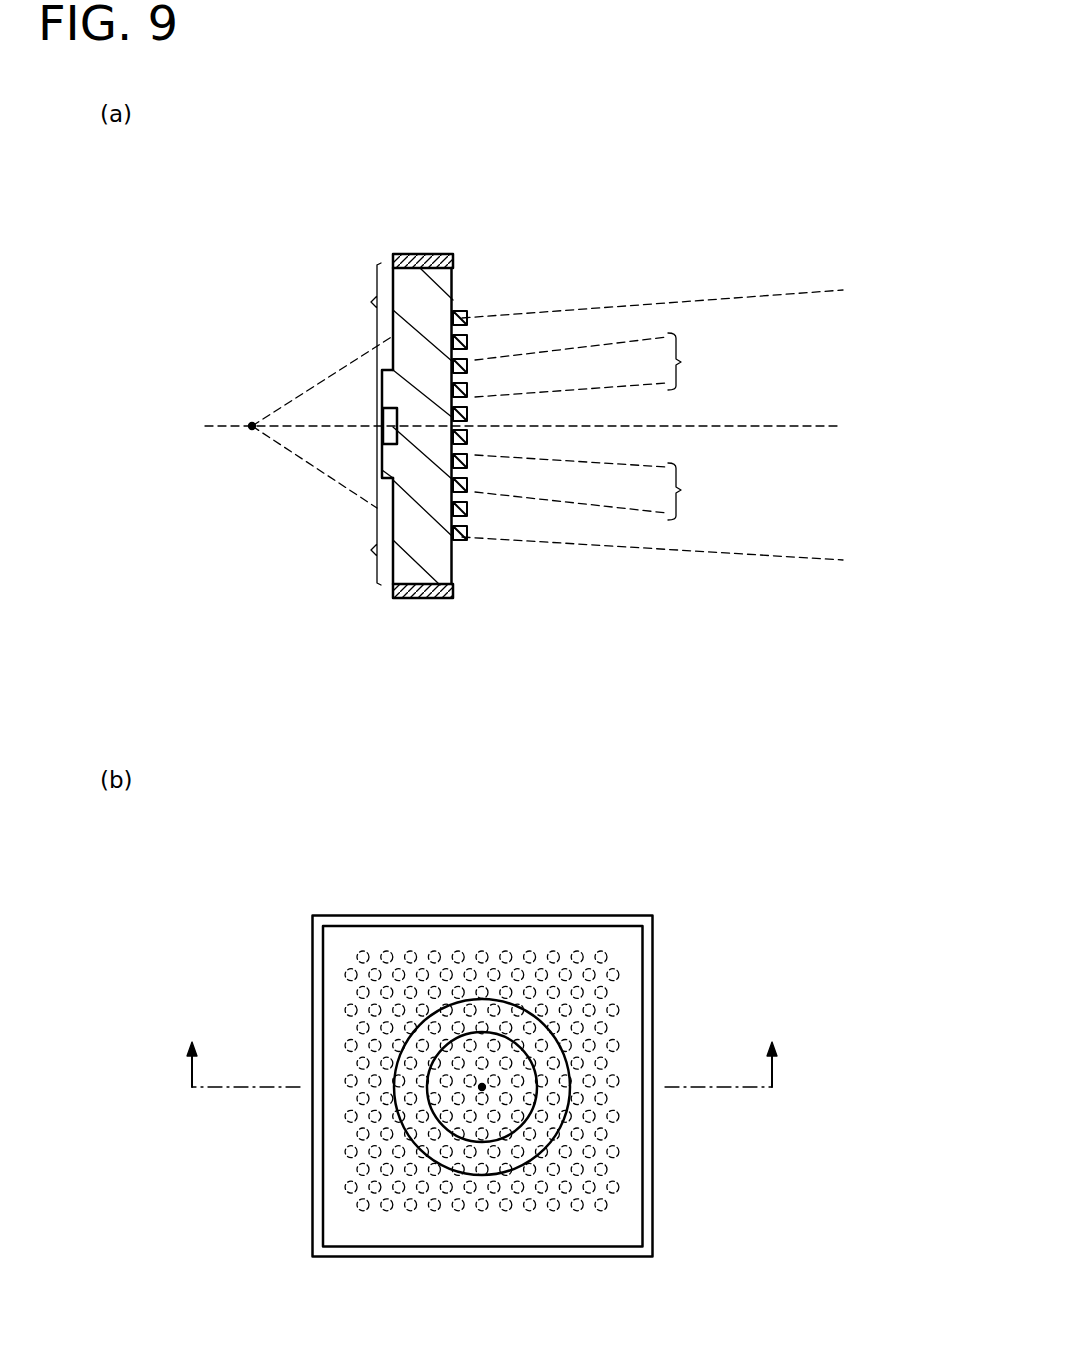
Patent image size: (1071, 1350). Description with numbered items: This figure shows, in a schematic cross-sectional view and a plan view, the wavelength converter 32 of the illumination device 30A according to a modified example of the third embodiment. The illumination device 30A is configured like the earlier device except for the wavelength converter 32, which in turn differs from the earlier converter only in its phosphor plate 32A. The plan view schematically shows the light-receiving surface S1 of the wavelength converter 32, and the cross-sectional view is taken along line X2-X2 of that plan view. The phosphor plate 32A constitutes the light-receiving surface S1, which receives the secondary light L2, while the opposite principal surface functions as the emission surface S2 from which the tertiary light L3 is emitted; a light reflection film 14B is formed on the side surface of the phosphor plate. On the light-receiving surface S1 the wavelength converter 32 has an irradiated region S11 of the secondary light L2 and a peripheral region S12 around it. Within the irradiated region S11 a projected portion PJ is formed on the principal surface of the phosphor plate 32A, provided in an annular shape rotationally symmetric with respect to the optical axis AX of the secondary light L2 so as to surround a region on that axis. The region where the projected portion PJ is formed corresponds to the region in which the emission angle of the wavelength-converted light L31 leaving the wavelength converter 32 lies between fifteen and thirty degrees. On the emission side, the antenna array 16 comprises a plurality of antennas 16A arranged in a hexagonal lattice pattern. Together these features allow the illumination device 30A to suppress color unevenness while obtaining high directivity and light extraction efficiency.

The illumination device 30A is at (262, 195).
The wavelength converter 32 is at (287, 195).
The light reflection film 14B is at (393, 262).
The phosphor plate 32A is at (395, 288).
The antenna array 16 is at (570, 212).
The antenna 16A is at (459, 318).
The light-receiving surface S1 is at (393, 563).
The irradiated region S11 is at (377, 420).
The peripheral region S12 is at (350, 424).
The emission surface S2 is at (455, 560).
The light source point SP is at (249, 422).
The projected portion PJ is at (378, 384).
The optical axis AX is at (482, 1083).
The secondary light L2 is at (335, 455).
The tertiary light L3 is at (778, 488).
The wavelength-converted light L31 is at (680, 362).
The line X2- X2 is at (485, 1064).